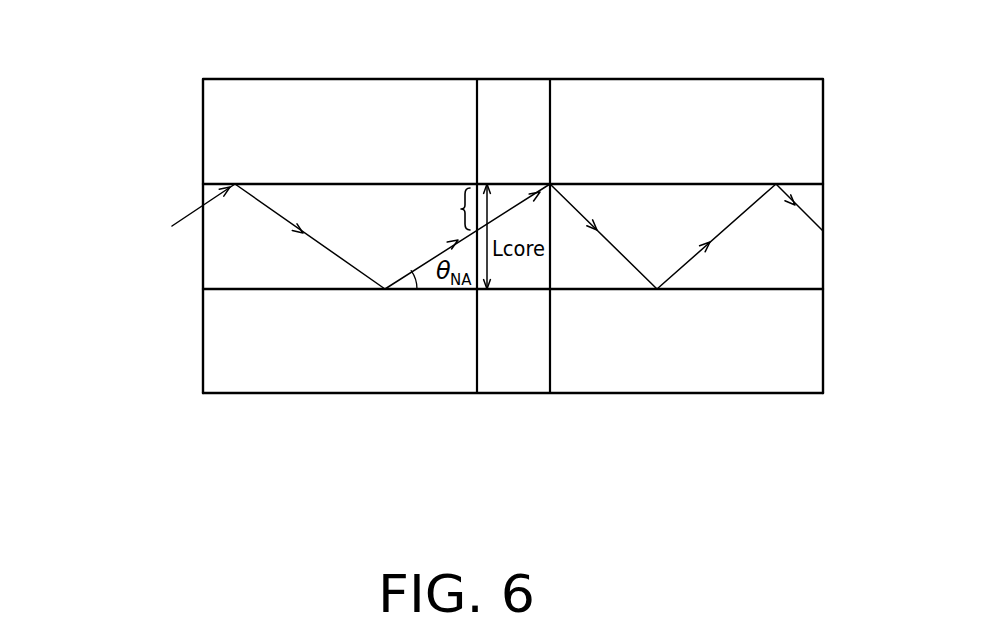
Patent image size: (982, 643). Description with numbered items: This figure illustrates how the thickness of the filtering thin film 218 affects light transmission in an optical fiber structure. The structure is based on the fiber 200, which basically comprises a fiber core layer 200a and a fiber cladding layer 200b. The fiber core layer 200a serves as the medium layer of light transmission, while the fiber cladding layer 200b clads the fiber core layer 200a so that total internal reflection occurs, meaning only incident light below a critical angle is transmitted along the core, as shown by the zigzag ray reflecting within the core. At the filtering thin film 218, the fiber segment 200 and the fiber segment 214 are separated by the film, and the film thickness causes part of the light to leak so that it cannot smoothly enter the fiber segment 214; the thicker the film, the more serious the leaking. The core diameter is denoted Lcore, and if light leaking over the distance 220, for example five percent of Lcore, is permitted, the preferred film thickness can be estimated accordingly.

The fiber 200 is at (86, 80).
The fiber core layer 200a is at (222, 248).
The fiber cladding layer 200b is at (222, 326).
The fiber segment 214 is at (841, 80).
The filtering thin film 218 is at (550, 400).
The distance 220 is at (462, 207).